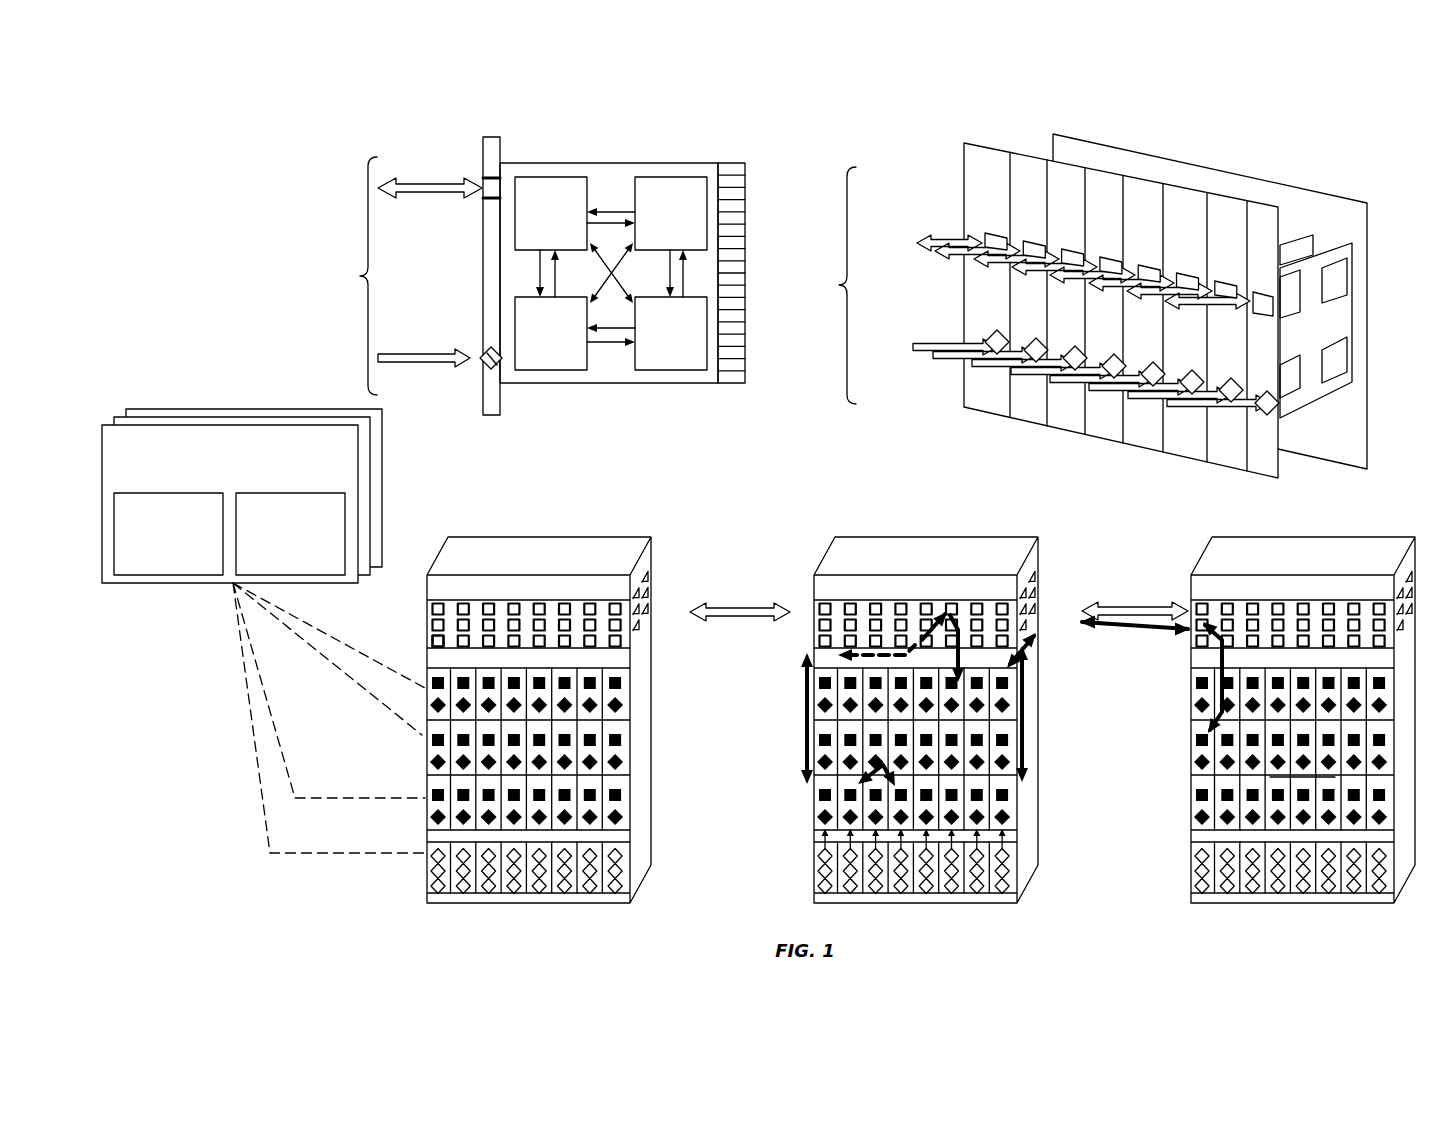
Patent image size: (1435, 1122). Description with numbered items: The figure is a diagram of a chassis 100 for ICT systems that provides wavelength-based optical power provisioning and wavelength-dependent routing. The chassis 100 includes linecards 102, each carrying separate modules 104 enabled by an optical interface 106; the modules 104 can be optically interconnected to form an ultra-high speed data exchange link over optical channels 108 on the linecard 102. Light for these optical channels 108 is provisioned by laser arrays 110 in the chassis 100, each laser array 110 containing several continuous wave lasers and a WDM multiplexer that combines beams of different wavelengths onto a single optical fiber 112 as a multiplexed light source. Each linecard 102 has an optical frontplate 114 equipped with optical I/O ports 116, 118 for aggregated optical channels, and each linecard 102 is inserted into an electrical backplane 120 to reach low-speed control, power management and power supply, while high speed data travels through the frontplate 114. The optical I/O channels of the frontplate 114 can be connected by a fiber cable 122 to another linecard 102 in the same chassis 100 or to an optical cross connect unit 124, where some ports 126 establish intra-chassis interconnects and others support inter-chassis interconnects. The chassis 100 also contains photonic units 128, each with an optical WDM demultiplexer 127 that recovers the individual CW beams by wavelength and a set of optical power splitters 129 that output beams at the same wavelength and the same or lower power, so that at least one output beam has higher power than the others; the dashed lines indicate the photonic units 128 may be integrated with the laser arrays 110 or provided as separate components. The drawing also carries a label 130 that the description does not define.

The chassis 100 is at (855, 720).
The linecard 102 is at (560, 162).
The module 104 is at (537, 234).
The optical interface 106 is at (798, 273).
The optical channel 108 is at (612, 362).
The laser array 110 is at (840, 873).
The optical fiber 112 is at (997, 870).
The optical frontplate 114 is at (493, 158).
The optical I/O port 116 is at (498, 370).
The optical I/O port 118 is at (488, 187).
The electrical backplane 120 is at (1297, 212).
The fiber cable 122 is at (803, 693).
The optical cross connect unit 124 is at (433, 612).
The port 126 is at (435, 642).
The optical WDM demultiplexer 127 is at (154, 567).
The photonic unit 128 is at (214, 479).
The optical power splitter 129 is at (276, 567).
The card substrate 130 is at (620, 182).